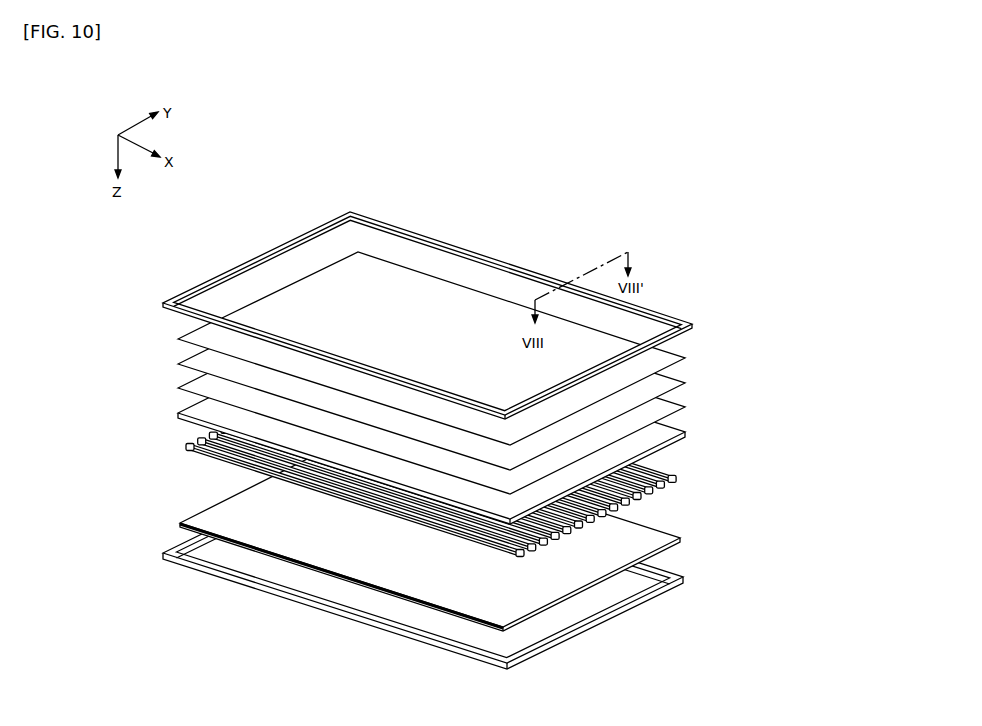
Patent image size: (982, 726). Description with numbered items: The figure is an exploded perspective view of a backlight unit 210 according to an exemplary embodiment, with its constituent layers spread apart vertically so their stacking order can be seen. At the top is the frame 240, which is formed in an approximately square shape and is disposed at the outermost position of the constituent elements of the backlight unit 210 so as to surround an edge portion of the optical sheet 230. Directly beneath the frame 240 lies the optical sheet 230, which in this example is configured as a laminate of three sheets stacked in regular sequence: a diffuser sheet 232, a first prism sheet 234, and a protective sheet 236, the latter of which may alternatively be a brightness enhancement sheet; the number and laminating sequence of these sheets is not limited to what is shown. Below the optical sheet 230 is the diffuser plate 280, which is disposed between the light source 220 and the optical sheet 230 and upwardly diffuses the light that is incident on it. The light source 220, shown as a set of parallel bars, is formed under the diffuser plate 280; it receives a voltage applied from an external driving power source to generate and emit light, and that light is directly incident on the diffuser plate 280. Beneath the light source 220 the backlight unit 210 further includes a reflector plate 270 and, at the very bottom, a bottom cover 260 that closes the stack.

The backlight unit 210 is at (688, 189).
The light source 220 is at (654, 462).
The optical sheet 230 is at (486, 373).
The diffuser sheet 232 is at (685, 407).
The first prism sheet 234 is at (685, 383).
The protective sheet 236 is at (685, 358).
The frame 240 is at (692, 324).
The bottom cover 260 is at (684, 577).
The reflector plate 270 is at (682, 539).
The diffuser plate 280 is at (686, 432).